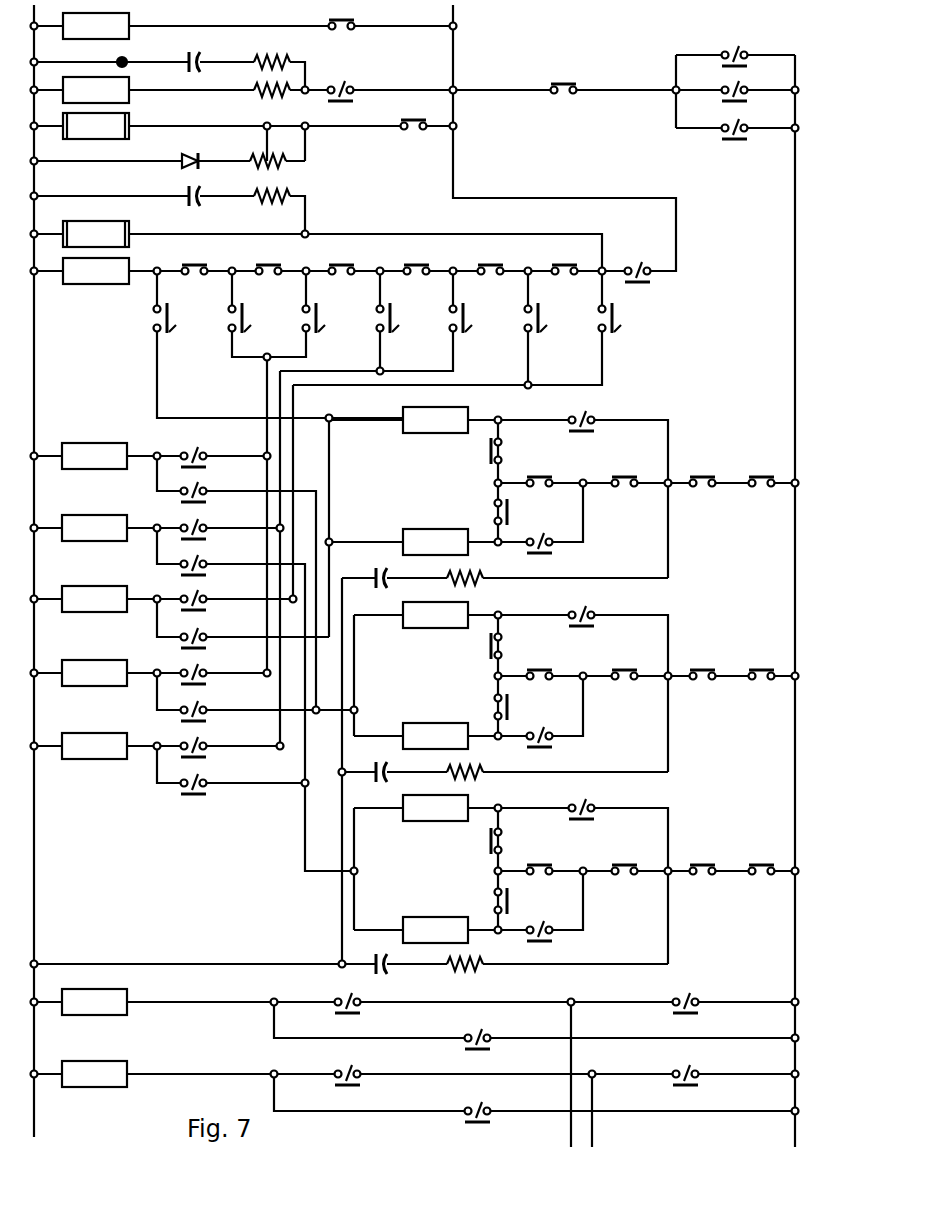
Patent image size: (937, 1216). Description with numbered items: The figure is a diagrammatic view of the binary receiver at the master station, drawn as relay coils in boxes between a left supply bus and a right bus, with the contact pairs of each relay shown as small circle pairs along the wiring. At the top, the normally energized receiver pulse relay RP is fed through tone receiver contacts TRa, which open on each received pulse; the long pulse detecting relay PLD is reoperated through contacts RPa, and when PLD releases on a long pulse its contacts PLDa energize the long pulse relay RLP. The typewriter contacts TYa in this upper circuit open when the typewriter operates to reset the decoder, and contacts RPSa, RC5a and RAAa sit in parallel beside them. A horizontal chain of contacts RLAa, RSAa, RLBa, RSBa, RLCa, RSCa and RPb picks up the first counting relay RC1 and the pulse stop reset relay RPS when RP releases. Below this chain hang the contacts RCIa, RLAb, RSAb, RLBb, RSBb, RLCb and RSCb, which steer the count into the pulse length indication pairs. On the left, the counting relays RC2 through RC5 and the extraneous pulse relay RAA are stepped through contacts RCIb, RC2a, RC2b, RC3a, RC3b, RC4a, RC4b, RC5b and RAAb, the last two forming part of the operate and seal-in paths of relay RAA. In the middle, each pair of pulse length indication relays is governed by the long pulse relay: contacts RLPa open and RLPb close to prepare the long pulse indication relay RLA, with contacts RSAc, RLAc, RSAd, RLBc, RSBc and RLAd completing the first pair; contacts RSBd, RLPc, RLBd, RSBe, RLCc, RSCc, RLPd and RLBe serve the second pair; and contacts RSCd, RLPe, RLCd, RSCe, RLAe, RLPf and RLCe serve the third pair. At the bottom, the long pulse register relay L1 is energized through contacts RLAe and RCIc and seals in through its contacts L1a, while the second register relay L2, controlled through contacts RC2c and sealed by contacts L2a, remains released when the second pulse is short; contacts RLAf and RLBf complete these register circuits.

The long pulse detecting relay contacts PLDa is at (344, 30).
The tone receiver contacts TRa is at (345, 81).
The receiver pulse relay contacts RPa is at (416, 119).
The typewriter contacts TYa is at (567, 83).
The pulse stop reset relay contacts RPSa is at (737, 49).
The fifth count relay contacts RC5a is at (737, 85).
The extraneous pulse relay contacts RAAa is at (737, 121).
The long pulse indication relay RLA contacts RLAa is at (194, 250).
The short pulse indication relay RSA contacts RSAa is at (268, 250).
The long pulse indication relay RLB contacts RLBa is at (341, 250).
The short pulse indication relay RSB contacts RSBa is at (416, 250).
The long pulse indication relay RLC contacts RLCa is at (490, 250).
The short pulse indication relay RSC contacts RSCa is at (564, 250).
The receiver pulse relay contacts RPb is at (644, 262).
The first count relay contacts RCIa is at (184, 317).
The long pulse indication relay RLA contacts RLAb is at (262, 317).
The short pulse indication relay RSA contacts RSAb is at (337, 317).
The long pulse indication relay RLB contacts RLBb is at (410, 317).
The short pulse indication relay RSB contacts RSBb is at (484, 317).
The long pulse indication relay RLC contacts RLCb is at (558, 317).
The short pulse indication relay RSC contacts RSCb is at (633, 317).
The first count relay contacts RCIb is at (211, 449).
The second count relay contacts RC2a is at (214, 484).
The second count relay contacts RC2b is at (214, 521).
The third count relay contacts RC3a is at (214, 557).
The third count relay contacts RC3b is at (214, 592).
The fourth count relay contacts RC4a is at (214, 630).
The fourth count relay contacts RC4b is at (214, 666).
The fifth count relay contacts RC5b is at (214, 739).
The extraneous pulse relay contacts RAAb is at (214, 776).
The short pulse indication relay RSA contacts RSAc is at (587, 412).
The long pulse relay contacts RLPa is at (490, 449).
The long pulse indication relay RLA contacts RLAc is at (543, 466).
The short pulse indication relay RSA contacts RSAd is at (628, 466).
The long pulse indication relay RLB contacts RLBc is at (706, 466).
The short pulse indication relay RSB contacts RSBc is at (765, 466).
The long pulse relay contacts RLPb is at (492, 511).
The long pulse indication relay RLA contacts RLAd is at (546, 531).
The short pulse indication relay RSB contacts RSBd is at (587, 607).
The long pulse relay contacts RLPc is at (490, 644).
The long pulse indication relay RLB contacts RLBd is at (543, 659).
The short pulse indication relay RSB contacts RSBe is at (628, 659).
The long pulse indication relay RLC contacts RLCc is at (706, 659).
The short pulse indication relay RSC contacts RSCc is at (765, 659).
The long pulse relay contacts RLPd is at (492, 706).
The long pulse indication relay RLB contacts RLBe is at (545, 725).
The short pulse indication relay RSC contacts RSCd is at (587, 800).
The long pulse relay contacts RLPe is at (490, 839).
The long pulse indication relay RLC contacts RLCd is at (543, 854).
The short pulse indication relay RSC contacts RSCe is at (628, 854).
The long pulse indication relay RLA contacts RLAe is at (706, 854).
The long pulse relay contacts RLPf is at (492, 900).
The long pulse indication relay RLC contacts RLCe is at (546, 919).
The first count relay contacts RCIc is at (347, 998).
The second count relay contacts RC2c is at (367, 1067).
The first register relay contacts L1a is at (491, 1031).
The second register relay contacts L2a is at (491, 1104).
The long pulse indication relay RLA contacts RLAf is at (703, 995).
The long pulse indication relay RLB contacts RLBf is at (703, 1067).